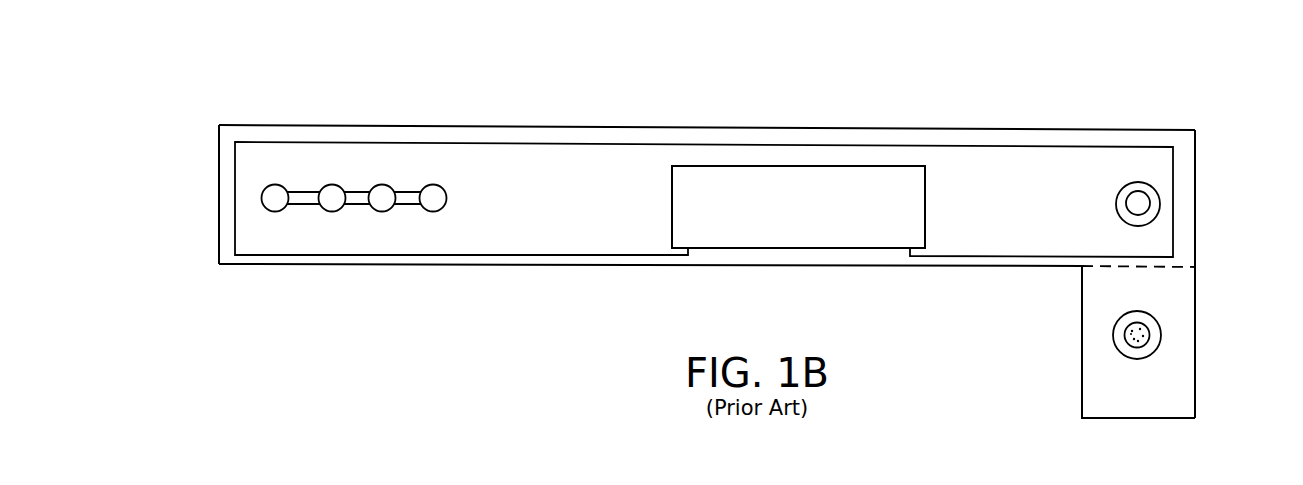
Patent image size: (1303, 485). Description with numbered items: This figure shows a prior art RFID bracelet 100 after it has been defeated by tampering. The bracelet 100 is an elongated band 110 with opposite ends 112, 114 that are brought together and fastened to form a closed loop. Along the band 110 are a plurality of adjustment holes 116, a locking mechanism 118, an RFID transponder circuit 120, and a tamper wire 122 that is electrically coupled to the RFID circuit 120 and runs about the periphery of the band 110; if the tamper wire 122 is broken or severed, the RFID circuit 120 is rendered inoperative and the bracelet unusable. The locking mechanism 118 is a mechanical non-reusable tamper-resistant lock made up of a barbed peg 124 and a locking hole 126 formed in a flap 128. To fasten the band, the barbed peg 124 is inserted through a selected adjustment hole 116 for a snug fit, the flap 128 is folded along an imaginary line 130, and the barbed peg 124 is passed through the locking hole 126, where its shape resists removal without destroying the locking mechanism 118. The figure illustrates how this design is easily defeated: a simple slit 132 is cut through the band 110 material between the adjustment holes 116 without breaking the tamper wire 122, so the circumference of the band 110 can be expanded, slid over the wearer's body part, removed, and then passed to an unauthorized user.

The RFID bracelet 100 is at (765, 76).
The band 110 is at (521, 125).
The end 112 is at (218, 172).
The end 114 is at (1196, 198).
The adjustment holes 116 is at (423, 208).
The locking mechanism 118 is at (1116, 203).
The RFID transponder circuit 120 is at (811, 249).
The tamper wire 122 is at (520, 256).
The barbed peg 124 is at (1138, 200).
The locking hole 126 is at (1137, 326).
The flap 128 is at (1187, 379).
The imaginary line 130 is at (1198, 266).
The slit 132 is at (404, 189).